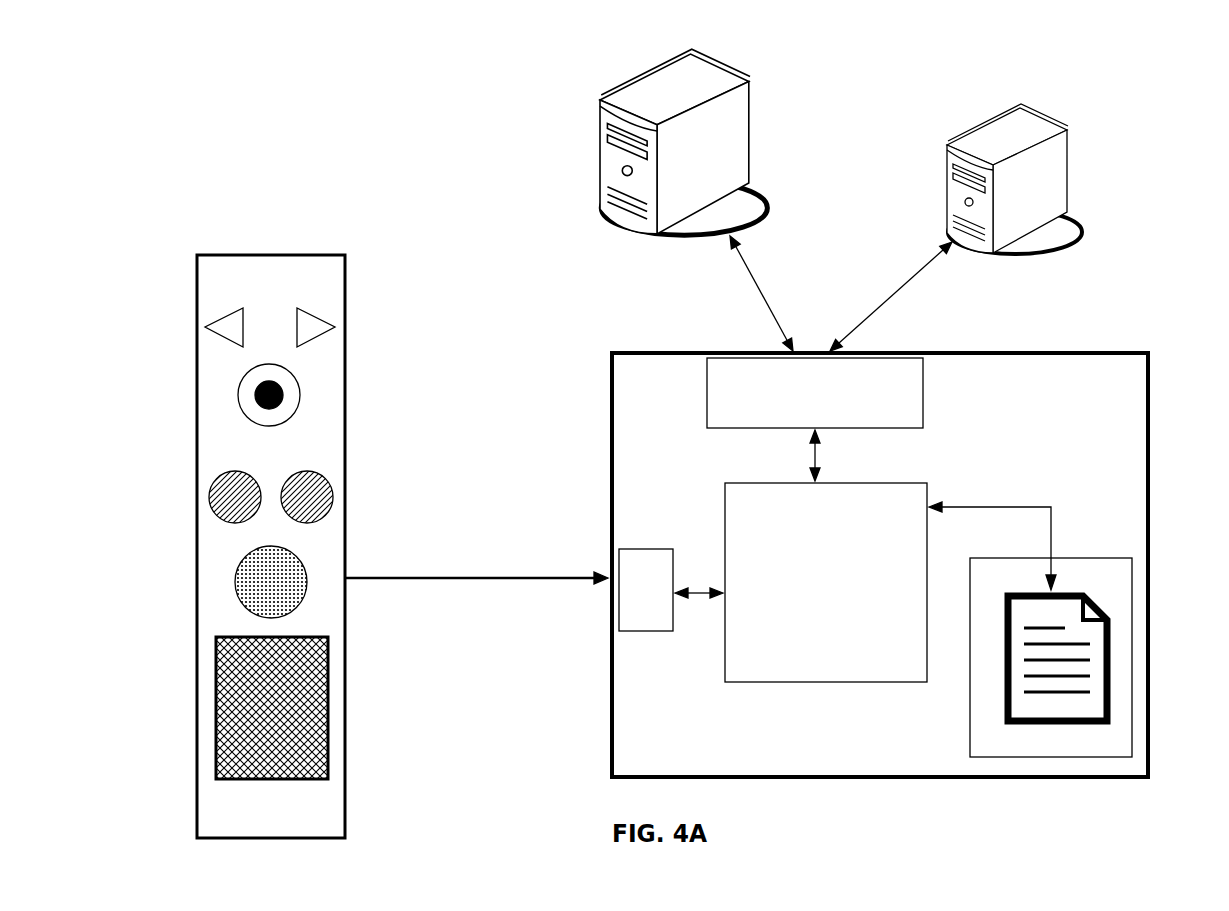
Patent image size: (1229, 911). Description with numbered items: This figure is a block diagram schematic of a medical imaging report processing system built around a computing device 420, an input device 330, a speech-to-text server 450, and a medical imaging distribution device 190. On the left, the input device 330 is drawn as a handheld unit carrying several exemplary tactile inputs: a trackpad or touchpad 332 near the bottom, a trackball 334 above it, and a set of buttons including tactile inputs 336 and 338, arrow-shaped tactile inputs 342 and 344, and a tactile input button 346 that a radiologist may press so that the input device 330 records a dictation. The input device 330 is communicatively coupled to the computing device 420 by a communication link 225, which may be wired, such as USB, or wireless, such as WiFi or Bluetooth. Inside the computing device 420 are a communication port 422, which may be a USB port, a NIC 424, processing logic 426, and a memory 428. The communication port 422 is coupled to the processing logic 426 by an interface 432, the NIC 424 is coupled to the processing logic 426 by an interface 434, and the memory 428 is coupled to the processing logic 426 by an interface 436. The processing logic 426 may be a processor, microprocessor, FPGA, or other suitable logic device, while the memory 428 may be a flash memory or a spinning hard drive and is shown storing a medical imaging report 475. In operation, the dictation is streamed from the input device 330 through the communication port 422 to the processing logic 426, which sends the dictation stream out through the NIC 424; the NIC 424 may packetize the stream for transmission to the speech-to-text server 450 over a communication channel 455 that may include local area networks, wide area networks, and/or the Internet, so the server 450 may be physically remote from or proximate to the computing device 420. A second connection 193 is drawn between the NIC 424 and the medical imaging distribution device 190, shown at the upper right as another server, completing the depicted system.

The input device 330 is at (249, 824).
The tactile input 342 is at (208, 326).
The tactile input 344 is at (322, 328).
The tactile input button 346 is at (302, 395).
The tactile input 338 is at (210, 488).
The tactile input 336 is at (333, 485).
The trackball 334 is at (308, 578).
The trackpad 332 is at (328, 700).
The communication link 225 is at (502, 578).
The computing device 420 is at (635, 754).
The NIC (Network Interface Card) 424 is at (843, 403).
The interface 434 is at (818, 459).
The processing logic 426 is at (865, 593).
The communication port 422 is at (632, 601).
The interface 432 is at (697, 588).
The interface 436 is at (1031, 506).
The memory 428 is at (1103, 751).
The medical imaging report 475 is at (1070, 592).
The speech-to-text server 450 is at (750, 164).
The communication channel 455 is at (770, 313).
The network connection 193 is at (884, 306).
The medical imaging distribution device 190 is at (1022, 113).